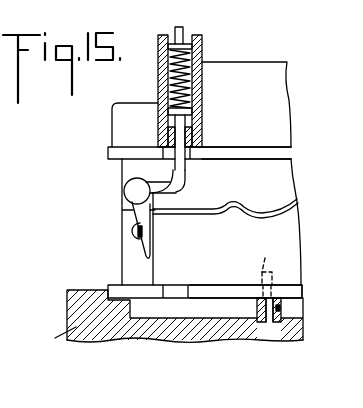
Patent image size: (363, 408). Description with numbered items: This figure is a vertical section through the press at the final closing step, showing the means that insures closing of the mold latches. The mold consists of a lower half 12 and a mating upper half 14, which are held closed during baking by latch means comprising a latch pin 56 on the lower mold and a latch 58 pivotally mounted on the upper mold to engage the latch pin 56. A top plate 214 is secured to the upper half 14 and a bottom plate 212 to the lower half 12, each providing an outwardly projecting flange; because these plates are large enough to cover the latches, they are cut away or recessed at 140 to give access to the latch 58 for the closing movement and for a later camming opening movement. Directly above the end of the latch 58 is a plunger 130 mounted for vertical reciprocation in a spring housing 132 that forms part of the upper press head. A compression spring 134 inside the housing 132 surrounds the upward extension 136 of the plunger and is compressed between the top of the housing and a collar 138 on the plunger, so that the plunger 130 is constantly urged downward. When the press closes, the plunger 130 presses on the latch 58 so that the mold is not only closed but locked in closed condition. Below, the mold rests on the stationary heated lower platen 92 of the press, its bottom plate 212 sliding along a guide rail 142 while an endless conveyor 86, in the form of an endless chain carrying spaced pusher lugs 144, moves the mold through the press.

The lower half of the mold 12 is at (288, 243).
The upper half of the mold 14 is at (287, 188).
The latch pin 56 is at (134, 230).
The latch 58 is at (170, 184).
The endless conveyor 86 is at (282, 308).
The lower platen 92 is at (53, 338).
The plunger 130 is at (205, 135).
The spring housing 132 is at (202, 51).
The compression spring 134 is at (198, 75).
The upward extension of the plunger 136 is at (186, 26).
The collar 138 is at (200, 110).
The recess 140 is at (193, 152).
The guide rail 142 is at (107, 306).
The pusher lug 144 is at (266, 258).
The bottom plate 212 is at (300, 290).
The top plate 214 is at (283, 152).